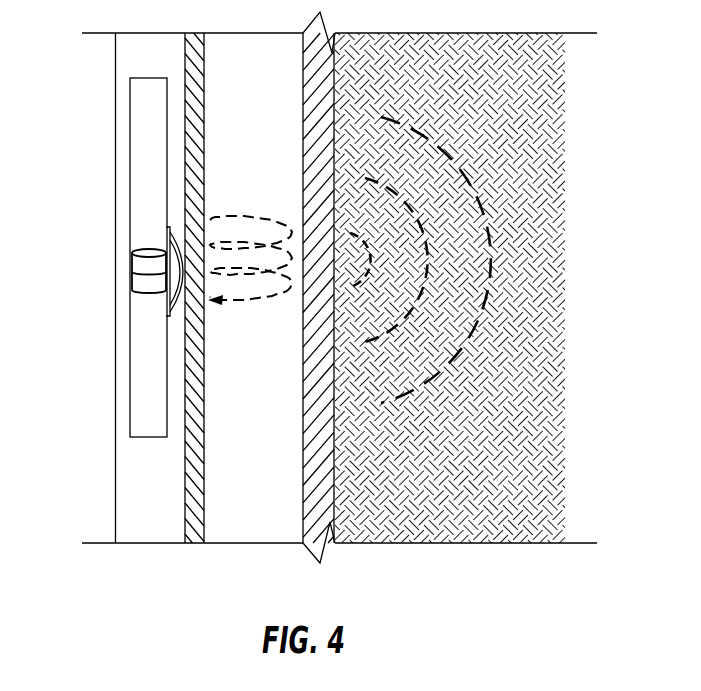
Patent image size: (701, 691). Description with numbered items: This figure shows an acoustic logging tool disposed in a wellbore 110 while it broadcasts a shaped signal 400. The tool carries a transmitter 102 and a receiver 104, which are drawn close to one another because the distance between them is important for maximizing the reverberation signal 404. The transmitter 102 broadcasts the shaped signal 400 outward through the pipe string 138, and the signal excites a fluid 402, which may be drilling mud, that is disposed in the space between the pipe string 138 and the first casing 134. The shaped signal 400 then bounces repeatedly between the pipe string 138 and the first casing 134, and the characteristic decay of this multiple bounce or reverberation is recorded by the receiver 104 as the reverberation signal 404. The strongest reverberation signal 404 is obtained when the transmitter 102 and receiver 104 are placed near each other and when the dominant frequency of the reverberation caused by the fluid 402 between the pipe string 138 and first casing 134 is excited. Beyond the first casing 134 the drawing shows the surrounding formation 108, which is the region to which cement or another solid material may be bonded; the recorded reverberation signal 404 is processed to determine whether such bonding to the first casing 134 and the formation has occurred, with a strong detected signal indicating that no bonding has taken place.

The transmitter 102 is at (118, 262).
The receiver 104 is at (118, 282).
The formation 108 is at (542, 502).
The wellbore 110 is at (125, 478).
The first casing 134 is at (308, 120).
The pipe string 138 is at (197, 80).
The shaped signal 400 is at (170, 302).
The fluid 402 is at (272, 438).
The reverberation signal 404 is at (212, 222).